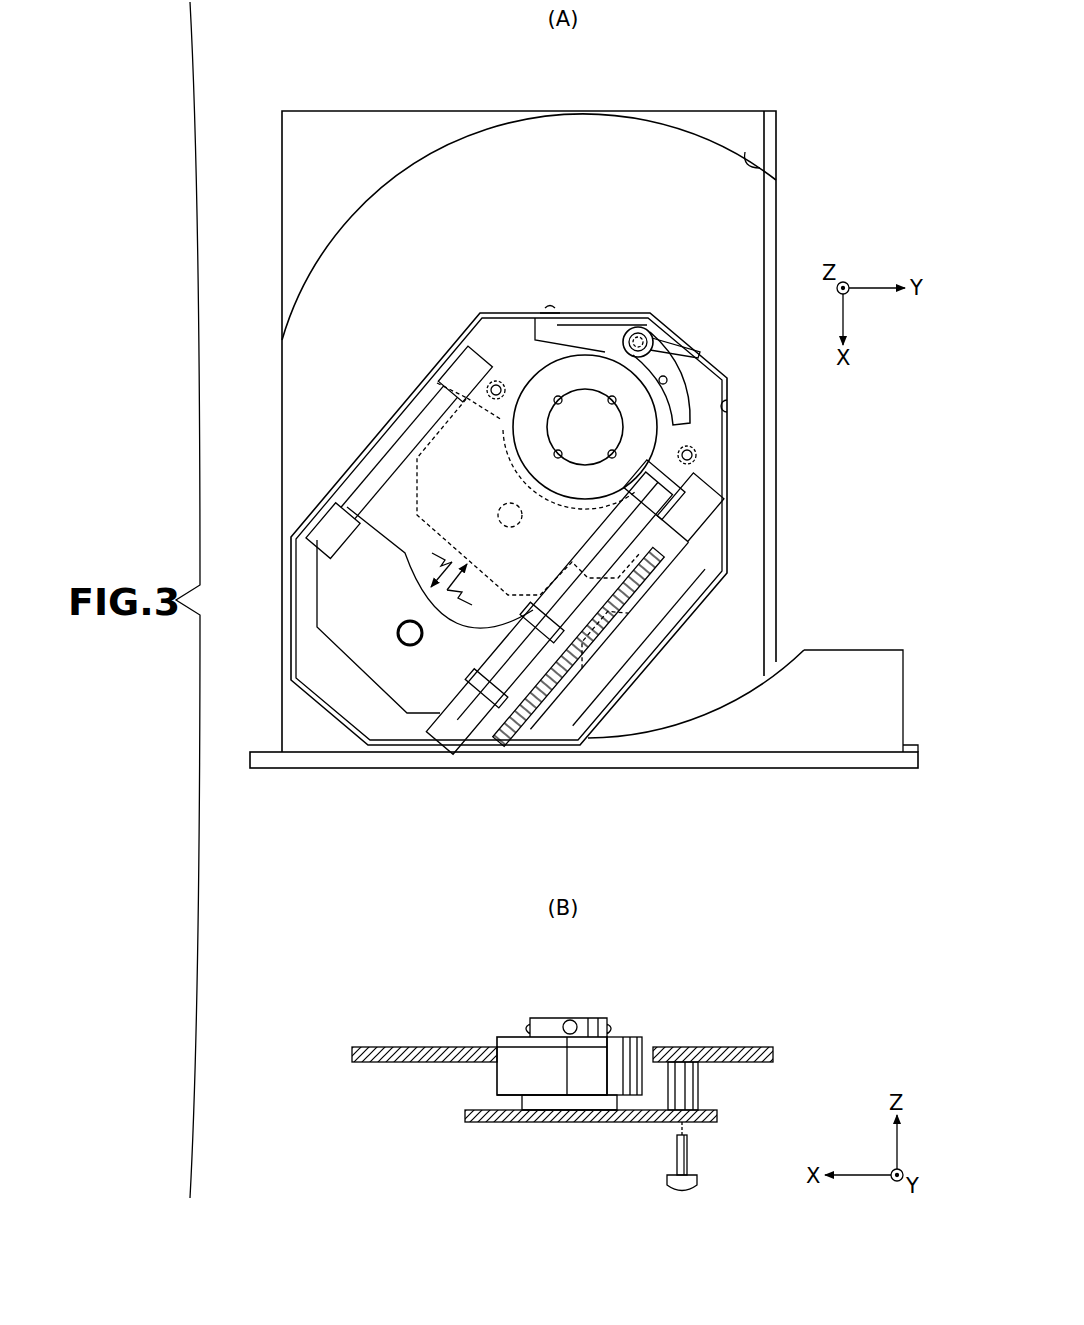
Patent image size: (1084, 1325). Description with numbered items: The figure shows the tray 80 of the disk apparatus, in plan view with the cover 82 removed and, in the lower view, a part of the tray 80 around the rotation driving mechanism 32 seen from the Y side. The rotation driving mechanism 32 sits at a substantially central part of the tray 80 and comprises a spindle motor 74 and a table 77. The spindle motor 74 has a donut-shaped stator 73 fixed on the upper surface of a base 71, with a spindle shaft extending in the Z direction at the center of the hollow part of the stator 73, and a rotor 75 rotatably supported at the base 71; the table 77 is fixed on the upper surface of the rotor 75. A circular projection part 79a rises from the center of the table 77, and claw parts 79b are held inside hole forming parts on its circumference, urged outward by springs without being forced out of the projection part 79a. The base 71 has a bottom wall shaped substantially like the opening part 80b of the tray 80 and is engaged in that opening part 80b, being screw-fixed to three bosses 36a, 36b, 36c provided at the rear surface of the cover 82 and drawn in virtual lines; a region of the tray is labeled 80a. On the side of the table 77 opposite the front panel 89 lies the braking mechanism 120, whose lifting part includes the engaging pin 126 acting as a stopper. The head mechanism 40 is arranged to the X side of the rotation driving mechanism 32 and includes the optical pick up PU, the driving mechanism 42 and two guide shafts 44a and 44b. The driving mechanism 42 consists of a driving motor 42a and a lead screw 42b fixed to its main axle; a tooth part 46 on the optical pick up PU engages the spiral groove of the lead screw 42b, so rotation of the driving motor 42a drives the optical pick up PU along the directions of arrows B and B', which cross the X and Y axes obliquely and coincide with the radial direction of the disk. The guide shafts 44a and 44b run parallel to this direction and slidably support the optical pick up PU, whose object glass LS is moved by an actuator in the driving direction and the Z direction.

The tray 80 is at (742, 108).
The optical disc 80a is at (750, 160).
The opening part 80b is at (728, 406).
The front panel 89 is at (312, 768).
The head mechanism 40 is at (305, 599).
The rotation driving mechanism 32 is at (501, 421).
The projection part 79a is at (624, 430).
The claw part 79b is at (565, 1020).
The table 77 is at (509, 433).
The cover 82 is at (750, 1047).
The spindle motor 74 is at (401, 1070).
The rotor 75 is at (497, 1080).
The stator 73 is at (522, 1100).
The base 71 is at (617, 672).
The boss 36a is at (640, 328).
The boss 36b is at (696, 460).
The boss 36c is at (498, 380).
The engaging pin 126 is at (549, 310).
The braking mechanism 120 is at (674, 338).
The guide shaft 44b is at (330, 482).
The guide shaft 44a is at (489, 724).
The tooth part 46 is at (522, 744).
The driving mechanism 42 is at (715, 601).
The driving motor 42a is at (707, 530).
The lead screw 42b is at (640, 587).
The optical pick up PU is at (317, 625).
The object glass LS is at (398, 638).
The arrow B is at (432, 558).
The arrow B' is at (469, 591).